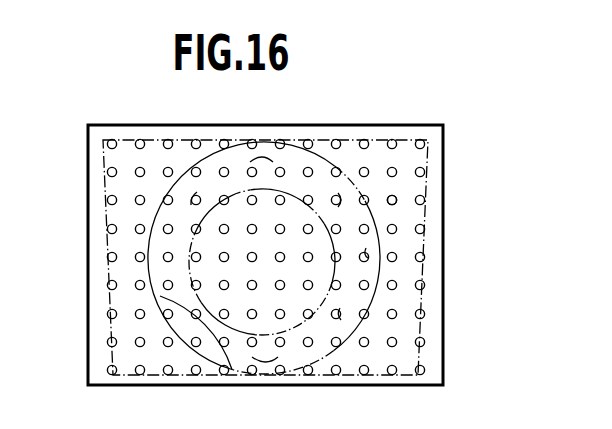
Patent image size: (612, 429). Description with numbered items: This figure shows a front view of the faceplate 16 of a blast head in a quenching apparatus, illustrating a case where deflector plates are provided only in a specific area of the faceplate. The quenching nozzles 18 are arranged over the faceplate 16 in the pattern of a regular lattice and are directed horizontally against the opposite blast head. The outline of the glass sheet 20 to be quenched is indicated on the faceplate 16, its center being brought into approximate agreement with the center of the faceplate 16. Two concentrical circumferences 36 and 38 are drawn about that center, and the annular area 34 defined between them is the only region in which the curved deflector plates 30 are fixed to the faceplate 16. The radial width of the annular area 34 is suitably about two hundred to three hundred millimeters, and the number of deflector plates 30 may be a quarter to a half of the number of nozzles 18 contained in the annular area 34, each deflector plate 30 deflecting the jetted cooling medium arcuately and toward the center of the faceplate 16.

The faceplate 16 is at (436, 253).
The quenching nozzle 18 is at (394, 199).
The glass sheet 20 is at (416, 326).
The deflector plate 30 is at (266, 362).
The annular area 34 is at (158, 273).
The concentrical circumference 36 is at (205, 218).
The concentrical circumference 38 is at (191, 352).